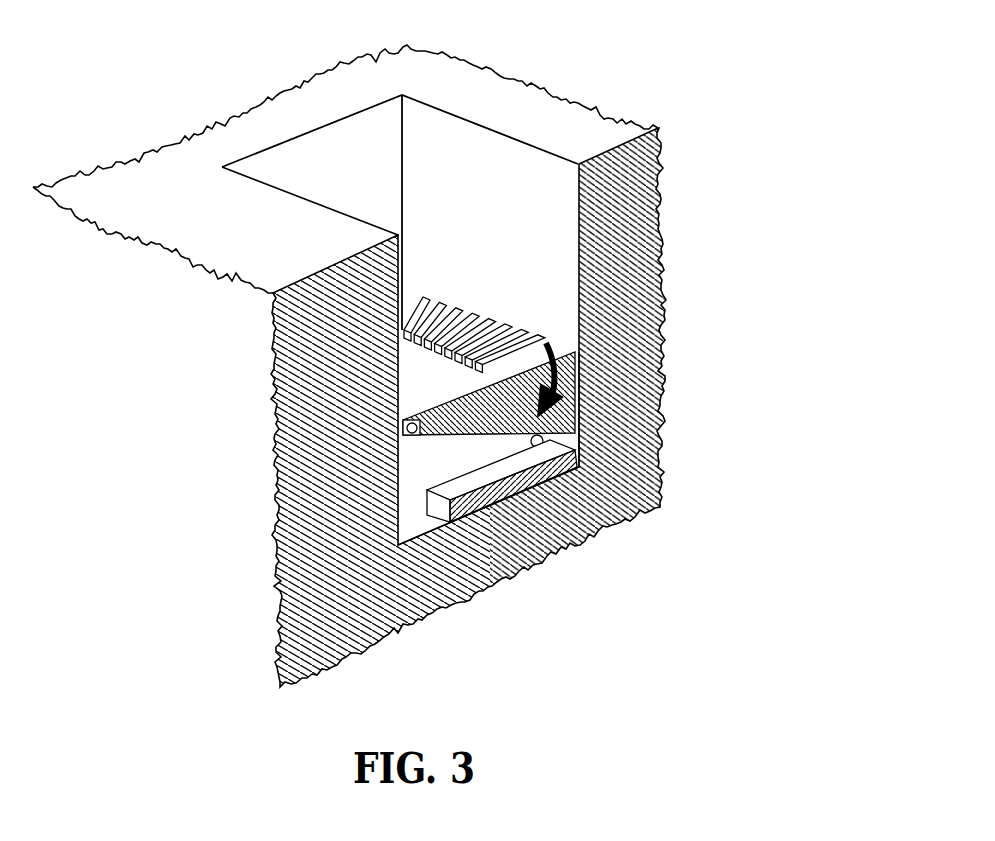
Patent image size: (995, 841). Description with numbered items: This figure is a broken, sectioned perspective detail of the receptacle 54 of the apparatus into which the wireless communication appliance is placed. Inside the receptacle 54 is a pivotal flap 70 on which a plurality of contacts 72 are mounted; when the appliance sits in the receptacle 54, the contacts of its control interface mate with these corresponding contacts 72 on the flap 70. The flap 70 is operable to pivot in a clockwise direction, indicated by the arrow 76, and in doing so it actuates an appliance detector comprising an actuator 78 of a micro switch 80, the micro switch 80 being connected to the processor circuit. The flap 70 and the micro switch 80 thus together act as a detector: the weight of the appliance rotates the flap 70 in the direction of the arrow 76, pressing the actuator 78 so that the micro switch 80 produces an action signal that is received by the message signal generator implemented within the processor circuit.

The receptacle 54 is at (468, 225).
The contacts 72 is at (503, 304).
The arrow 76 is at (575, 352).
The pivotal flap 70 is at (557, 423).
The actuator 78 is at (486, 461).
The micro switch 80 is at (588, 500).